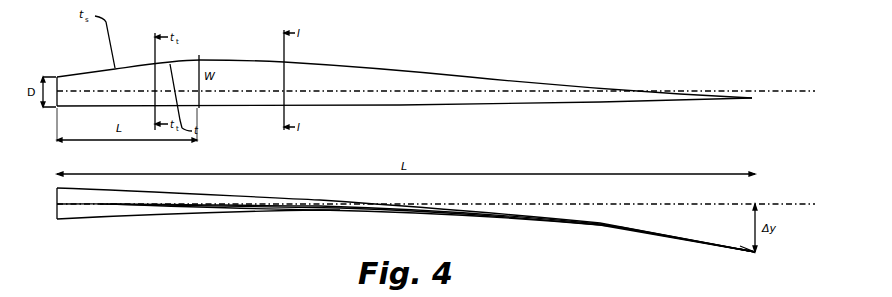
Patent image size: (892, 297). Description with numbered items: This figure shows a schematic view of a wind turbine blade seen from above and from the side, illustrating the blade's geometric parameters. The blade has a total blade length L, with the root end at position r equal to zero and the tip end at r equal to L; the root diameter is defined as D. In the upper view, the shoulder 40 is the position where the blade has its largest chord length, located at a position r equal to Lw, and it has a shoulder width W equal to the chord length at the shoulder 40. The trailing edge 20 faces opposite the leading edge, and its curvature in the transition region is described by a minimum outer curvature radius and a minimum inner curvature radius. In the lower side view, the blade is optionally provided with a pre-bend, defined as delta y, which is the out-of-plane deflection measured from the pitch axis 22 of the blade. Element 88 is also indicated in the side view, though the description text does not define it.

The trailing edge 20 is at (335, 91).
The pitch axis 22 is at (758, 204).
The shoulder 40 is at (199, 55).
The bend line 88 is at (190, 212).